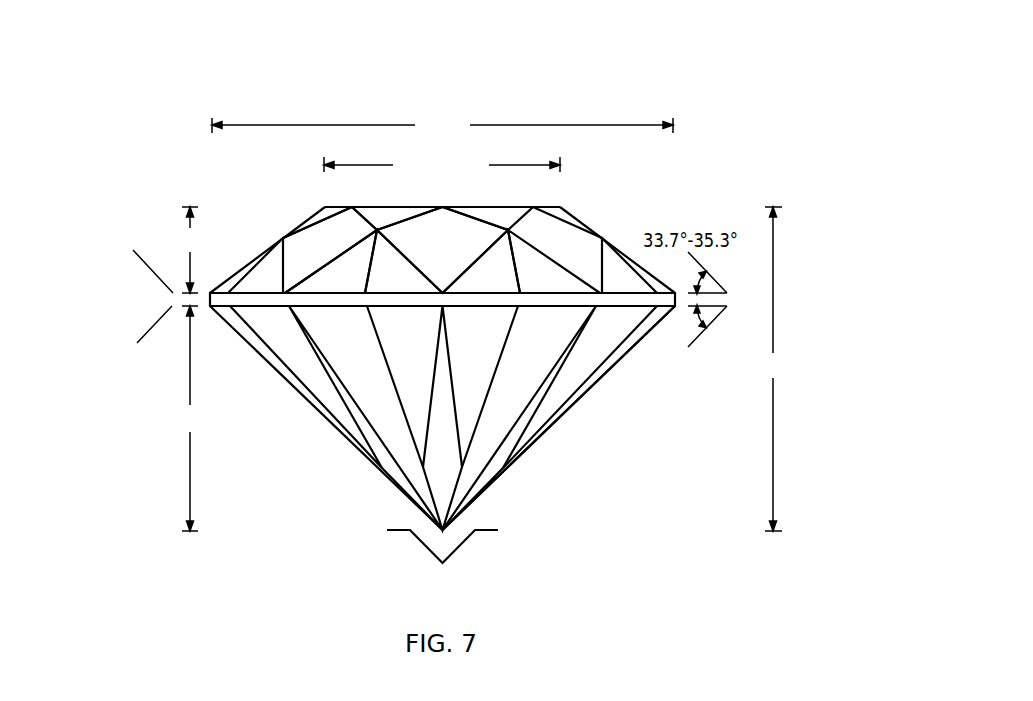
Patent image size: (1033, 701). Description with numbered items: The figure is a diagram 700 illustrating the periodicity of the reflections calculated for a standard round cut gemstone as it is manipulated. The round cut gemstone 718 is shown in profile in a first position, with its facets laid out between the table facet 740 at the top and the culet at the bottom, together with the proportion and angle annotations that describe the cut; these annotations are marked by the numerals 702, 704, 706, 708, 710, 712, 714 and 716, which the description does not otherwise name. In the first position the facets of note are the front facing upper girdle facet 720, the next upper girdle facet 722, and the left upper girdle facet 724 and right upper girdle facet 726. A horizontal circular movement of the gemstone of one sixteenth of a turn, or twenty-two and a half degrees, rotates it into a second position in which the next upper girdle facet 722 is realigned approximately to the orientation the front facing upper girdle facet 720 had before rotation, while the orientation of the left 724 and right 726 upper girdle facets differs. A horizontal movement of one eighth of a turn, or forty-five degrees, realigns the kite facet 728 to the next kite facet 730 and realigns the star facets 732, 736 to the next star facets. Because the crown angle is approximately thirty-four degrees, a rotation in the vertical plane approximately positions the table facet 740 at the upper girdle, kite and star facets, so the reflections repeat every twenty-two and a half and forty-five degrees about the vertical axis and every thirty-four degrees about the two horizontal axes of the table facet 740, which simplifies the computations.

The diagram 700 is at (644, 47).
The girdle diameter (100%) 702 is at (675, 128).
The table width 704 is at (562, 167).
The total depth dimension 706 is at (742, 240).
The total depth percentage 708 is at (838, 367).
The culet 710 is at (467, 538).
The pavilion depth 712 is at (250, 418).
The girdle thickness 714 is at (77, 300).
The crown height 716 is at (133, 243).
The round cut gemstone 718 is at (530, 445).
The front facing upper girdle facet 720 is at (406, 285).
The next upper girdle facet 722 is at (508, 285).
The left upper girdle facet 724 is at (357, 285).
The right upper girdle facet 726 is at (557, 285).
The kite facet 728 is at (457, 251).
The next kite facet 730 is at (328, 251).
The star facet 732 is at (380, 217).
The star facet 736 is at (503, 218).
The table facet 740 is at (330, 203).